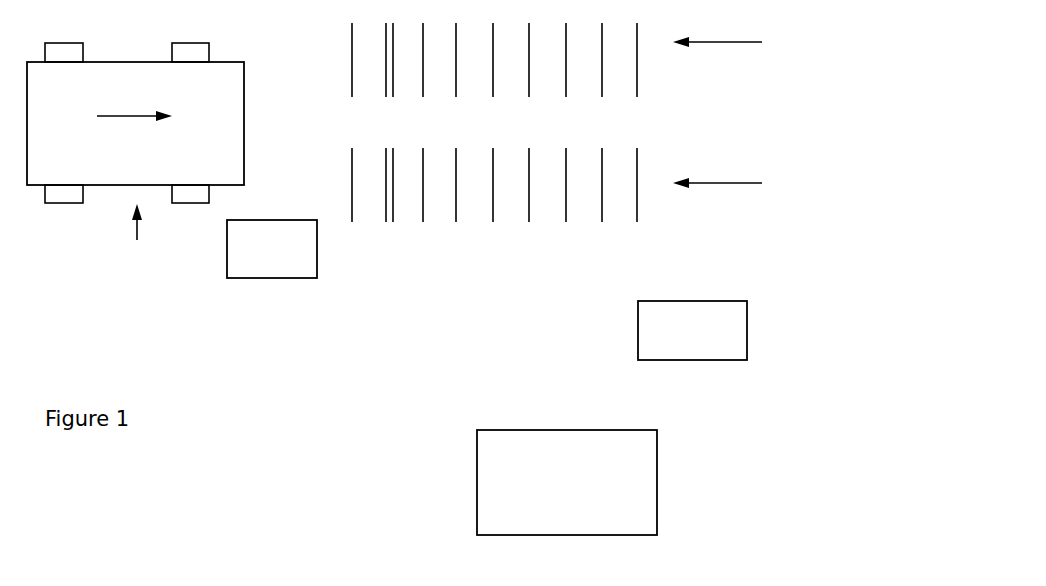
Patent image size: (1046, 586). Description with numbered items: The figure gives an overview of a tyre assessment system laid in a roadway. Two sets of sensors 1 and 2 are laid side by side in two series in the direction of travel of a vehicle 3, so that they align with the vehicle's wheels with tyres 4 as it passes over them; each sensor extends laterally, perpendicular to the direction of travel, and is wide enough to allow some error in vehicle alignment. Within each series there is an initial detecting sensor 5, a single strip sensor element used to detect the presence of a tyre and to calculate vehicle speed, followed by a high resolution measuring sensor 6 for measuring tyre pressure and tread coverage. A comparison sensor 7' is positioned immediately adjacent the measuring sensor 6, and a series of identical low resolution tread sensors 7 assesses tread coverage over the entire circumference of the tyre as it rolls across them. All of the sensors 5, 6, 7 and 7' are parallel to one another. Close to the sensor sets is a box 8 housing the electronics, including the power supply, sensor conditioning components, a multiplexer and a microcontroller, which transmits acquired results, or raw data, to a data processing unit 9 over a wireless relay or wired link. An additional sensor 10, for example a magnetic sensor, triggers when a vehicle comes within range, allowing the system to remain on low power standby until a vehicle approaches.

The set of sensors 1 is at (731, 42).
The set of sensors 2 is at (731, 183).
The vehicle 3 is at (136, 248).
The tyre 4 is at (65, 203).
The detecting sensor 5 is at (353, 238).
The measuring sensor 6 is at (388, 237).
The low resolution tread sensor 7 is at (530, 179).
The comparison sensor 7' is at (415, 236).
The box 8 is at (692, 330).
The data processing unit 9 is at (567, 482).
The additional sensor 10 is at (272, 249).